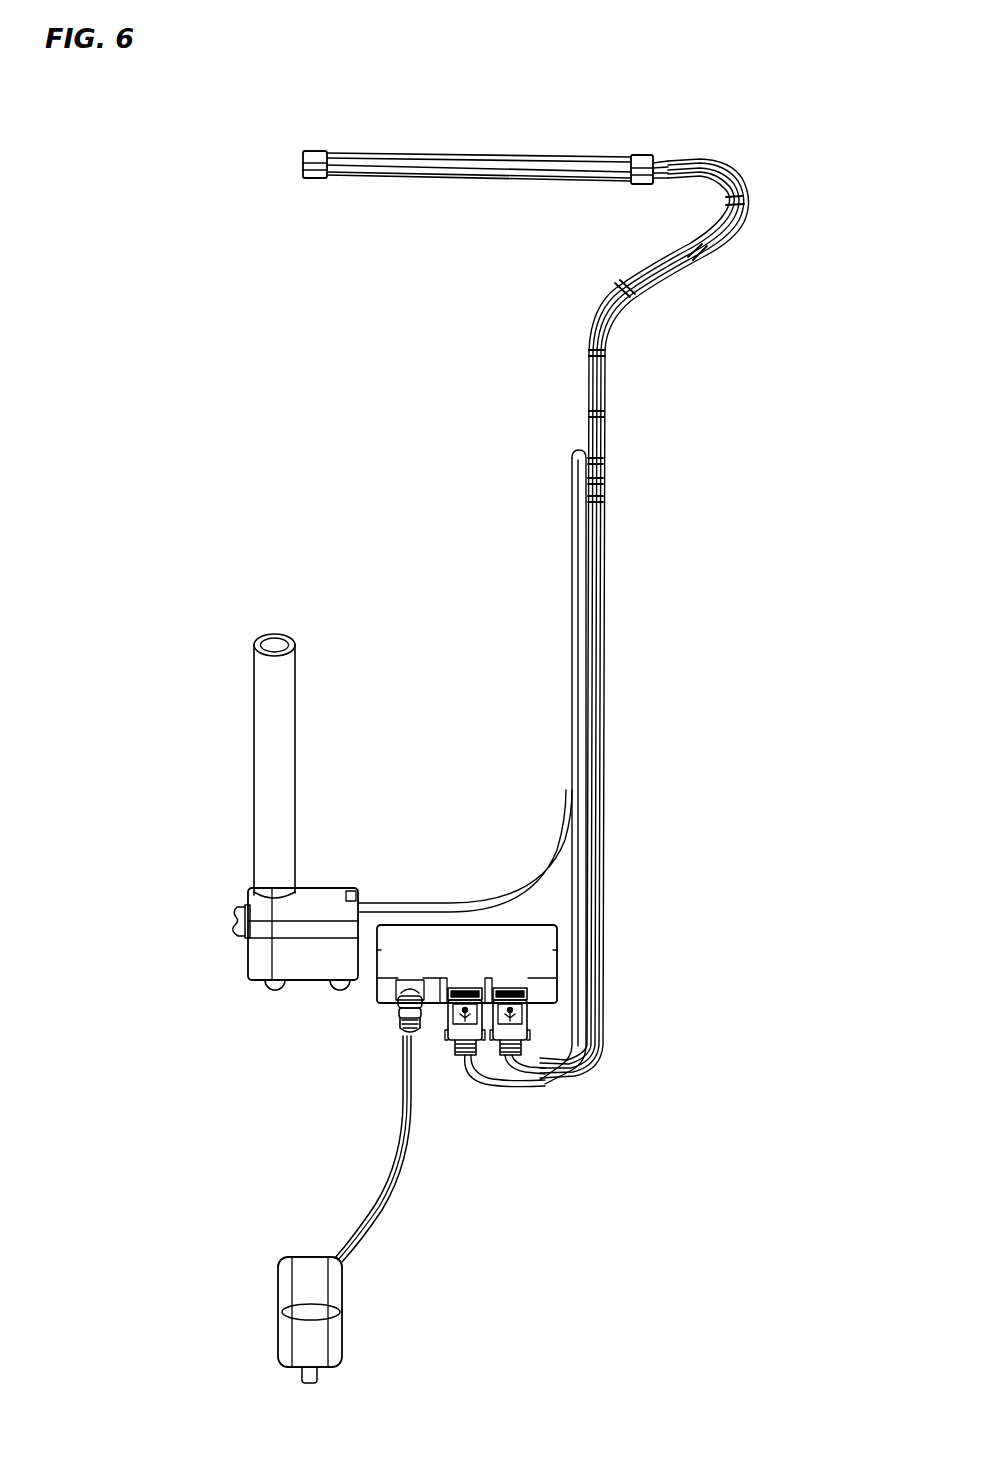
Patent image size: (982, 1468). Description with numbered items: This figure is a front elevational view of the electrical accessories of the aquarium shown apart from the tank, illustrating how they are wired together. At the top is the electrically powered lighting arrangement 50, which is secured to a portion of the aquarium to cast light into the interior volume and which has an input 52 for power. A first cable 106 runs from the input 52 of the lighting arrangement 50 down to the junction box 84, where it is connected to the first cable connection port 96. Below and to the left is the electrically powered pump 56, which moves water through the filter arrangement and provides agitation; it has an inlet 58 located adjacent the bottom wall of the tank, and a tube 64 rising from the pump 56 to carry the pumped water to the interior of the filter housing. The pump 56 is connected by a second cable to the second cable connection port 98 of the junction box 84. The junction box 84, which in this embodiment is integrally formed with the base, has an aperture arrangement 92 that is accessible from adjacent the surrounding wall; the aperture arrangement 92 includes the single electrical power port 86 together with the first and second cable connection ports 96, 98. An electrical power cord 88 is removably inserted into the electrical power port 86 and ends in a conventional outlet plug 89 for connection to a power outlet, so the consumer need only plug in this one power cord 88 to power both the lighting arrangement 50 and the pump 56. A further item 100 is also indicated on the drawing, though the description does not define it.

The lighting arrangement 50 is at (390, 153).
The input 52 is at (658, 162).
The pump 56 is at (318, 897).
The inlet 58 is at (234, 921).
The tube 64 is at (253, 765).
The junction box 84 is at (386, 960).
The electrical power port 86 is at (410, 985).
The electrical power cord 88 is at (395, 1160).
The outlet plug 89 is at (330, 1292).
The aperture arrangement 92 is at (432, 1048).
The first cable connection port 96 is at (508, 988).
The second cable connection port 98 is at (462, 988).
The cable 100 is at (518, 1087).
The first cable 106 is at (600, 982).